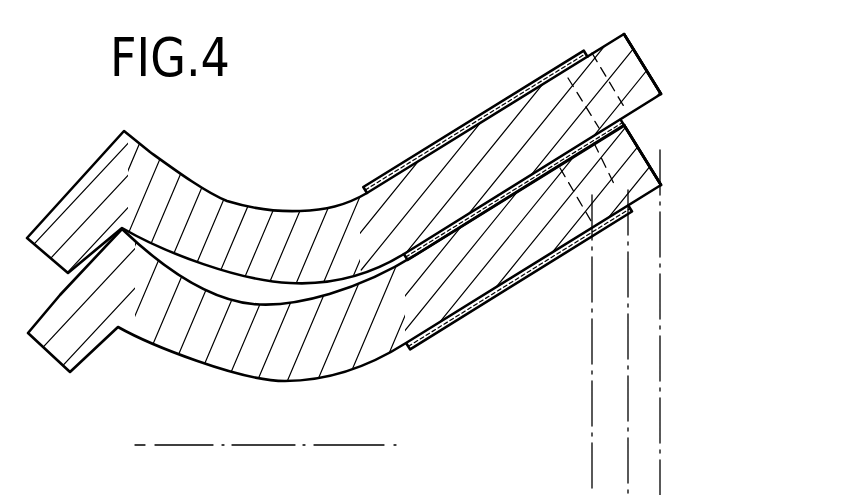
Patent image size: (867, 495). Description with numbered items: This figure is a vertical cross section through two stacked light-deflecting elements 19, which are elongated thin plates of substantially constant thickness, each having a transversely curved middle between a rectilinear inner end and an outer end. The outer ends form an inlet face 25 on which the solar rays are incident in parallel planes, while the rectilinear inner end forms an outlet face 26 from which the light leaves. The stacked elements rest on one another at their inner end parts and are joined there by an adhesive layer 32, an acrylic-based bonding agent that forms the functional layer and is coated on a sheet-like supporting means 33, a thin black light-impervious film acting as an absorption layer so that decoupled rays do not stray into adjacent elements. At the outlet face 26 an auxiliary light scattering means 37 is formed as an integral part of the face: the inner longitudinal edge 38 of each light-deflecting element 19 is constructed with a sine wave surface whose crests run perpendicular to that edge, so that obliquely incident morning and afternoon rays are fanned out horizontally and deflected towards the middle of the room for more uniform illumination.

The light-deflecting element 19 is at (298, 325).
The inlet face 25 is at (85, 163).
The outlet face 26 is at (634, 80).
The adhesive layer 32 is at (462, 124).
The sheet-like supporting means 33 is at (492, 107).
The auxiliary light scattering means 37 is at (648, 38).
The inner longitudinal edge 38 is at (664, 89).